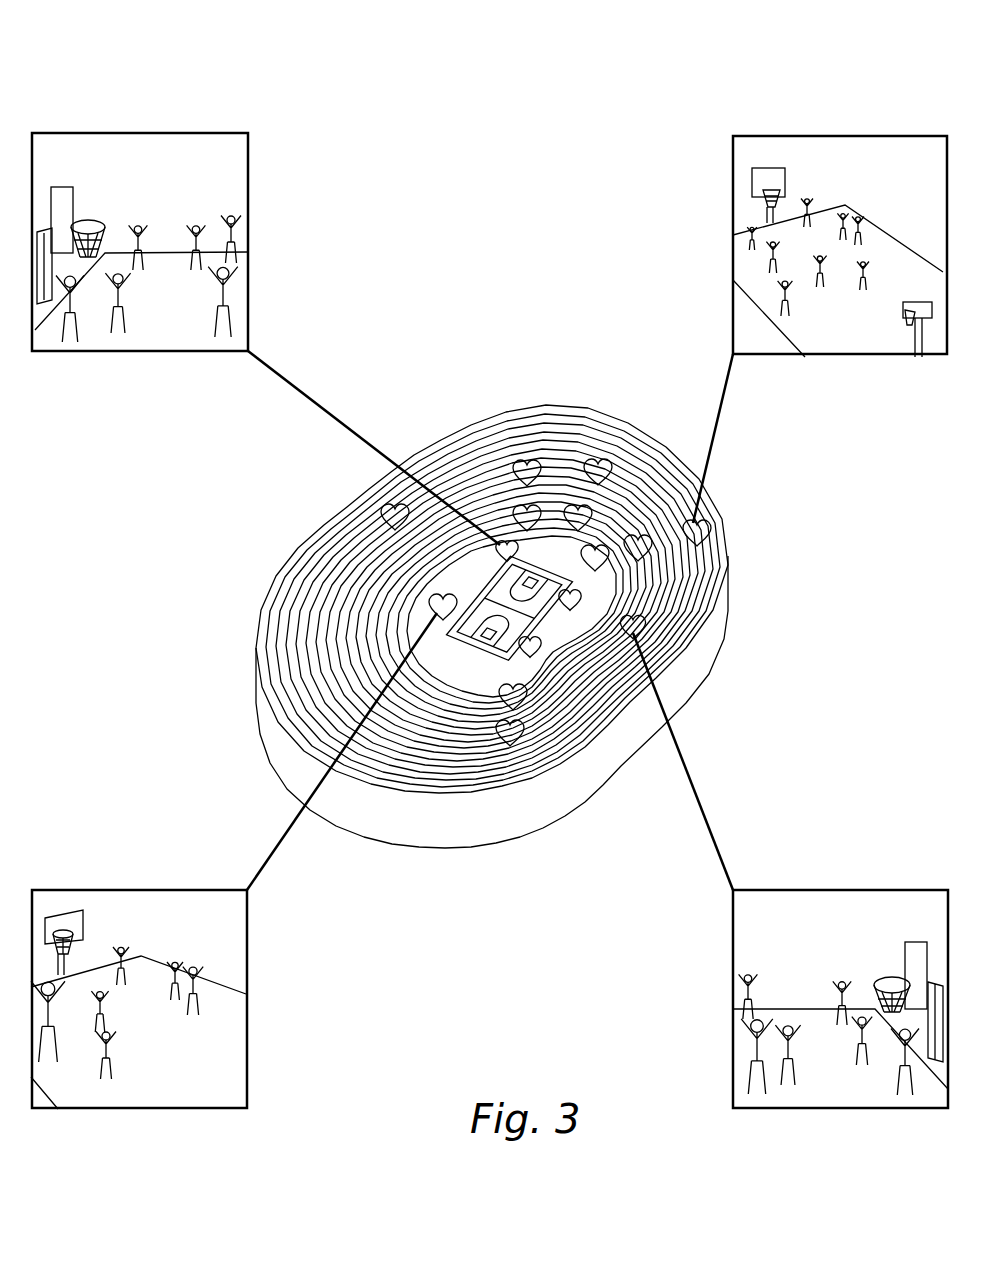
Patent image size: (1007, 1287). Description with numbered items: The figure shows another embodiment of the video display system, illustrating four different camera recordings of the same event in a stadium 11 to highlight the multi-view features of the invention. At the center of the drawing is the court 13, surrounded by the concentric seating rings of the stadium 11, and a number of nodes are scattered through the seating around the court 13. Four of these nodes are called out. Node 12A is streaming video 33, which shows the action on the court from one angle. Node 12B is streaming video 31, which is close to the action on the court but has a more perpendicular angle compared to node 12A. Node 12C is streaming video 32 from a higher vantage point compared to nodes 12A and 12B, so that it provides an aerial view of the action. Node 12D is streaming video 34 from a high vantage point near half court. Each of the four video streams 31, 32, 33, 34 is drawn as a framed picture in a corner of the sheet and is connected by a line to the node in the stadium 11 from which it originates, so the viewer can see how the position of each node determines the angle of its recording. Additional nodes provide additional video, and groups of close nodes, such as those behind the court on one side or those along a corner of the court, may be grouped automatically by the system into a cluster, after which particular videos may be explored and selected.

The stadium 11 is at (302, 588).
The node 12A is at (437, 608).
The node 12B is at (500, 543).
The node 12C is at (693, 525).
The node 12D is at (640, 626).
The court 13 is at (530, 593).
The video 31 is at (187, 149).
The video 32 is at (875, 158).
The video 33 is at (173, 907).
The video 34 is at (828, 915).